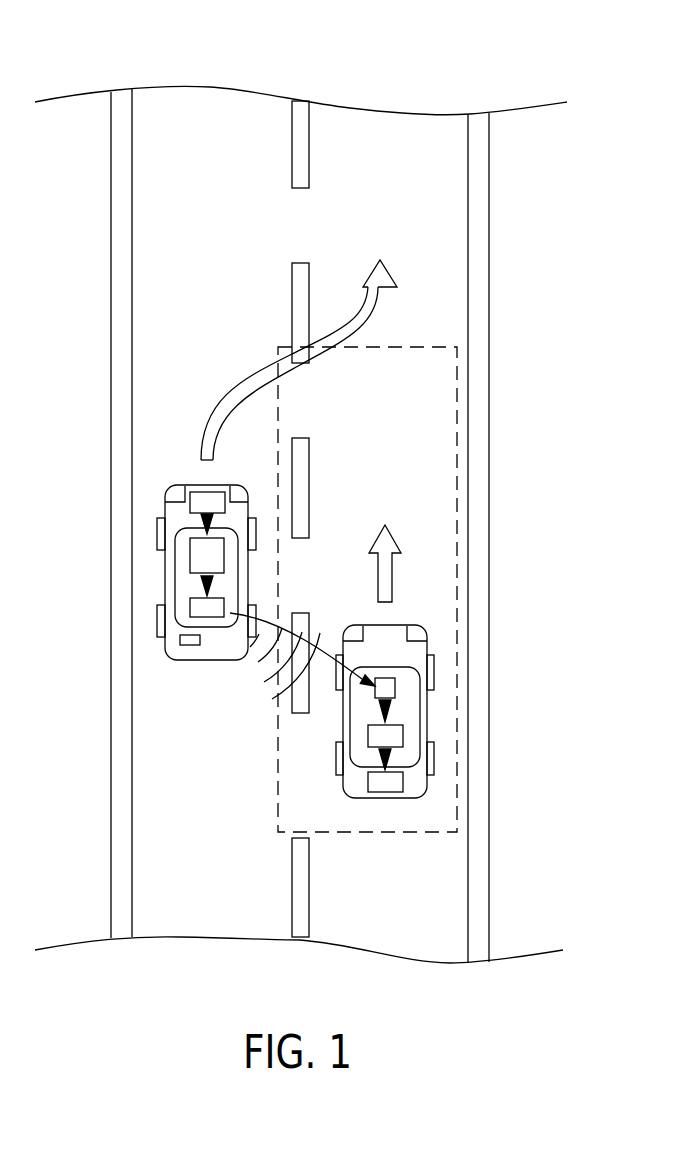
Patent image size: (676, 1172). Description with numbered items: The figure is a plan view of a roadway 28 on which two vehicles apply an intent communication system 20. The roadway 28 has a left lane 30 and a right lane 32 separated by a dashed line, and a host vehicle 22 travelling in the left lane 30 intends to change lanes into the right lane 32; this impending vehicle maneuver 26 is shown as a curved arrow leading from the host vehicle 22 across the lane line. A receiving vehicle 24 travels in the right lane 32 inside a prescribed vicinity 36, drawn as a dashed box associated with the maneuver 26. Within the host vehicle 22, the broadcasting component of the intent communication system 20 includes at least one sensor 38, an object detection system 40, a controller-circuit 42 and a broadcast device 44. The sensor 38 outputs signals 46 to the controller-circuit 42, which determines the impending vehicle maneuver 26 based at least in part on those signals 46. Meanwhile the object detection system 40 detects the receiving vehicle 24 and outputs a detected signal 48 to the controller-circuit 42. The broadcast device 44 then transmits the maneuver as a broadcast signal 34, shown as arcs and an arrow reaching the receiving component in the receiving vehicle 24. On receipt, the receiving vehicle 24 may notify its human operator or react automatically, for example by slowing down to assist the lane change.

The intent communication system 20 is at (519, 510).
The host vehicle 22 is at (149, 576).
The receiving vehicle 24 is at (455, 712).
The impending vehicle maneuver 26 is at (320, 368).
The roadway 28 is at (506, 163).
The left lane 30 is at (207, 105).
The right lane 32 is at (385, 125).
The broadcast signal 34 is at (327, 688).
The prescribed vicinity 36 is at (458, 396).
The sensor 38 is at (207, 492).
The object detection system 40 is at (191, 650).
The controller-circuit 42 is at (230, 553).
The broadcast device 44 is at (233, 605).
The signals 46 is at (202, 518).
The detected signal 48 is at (199, 582).